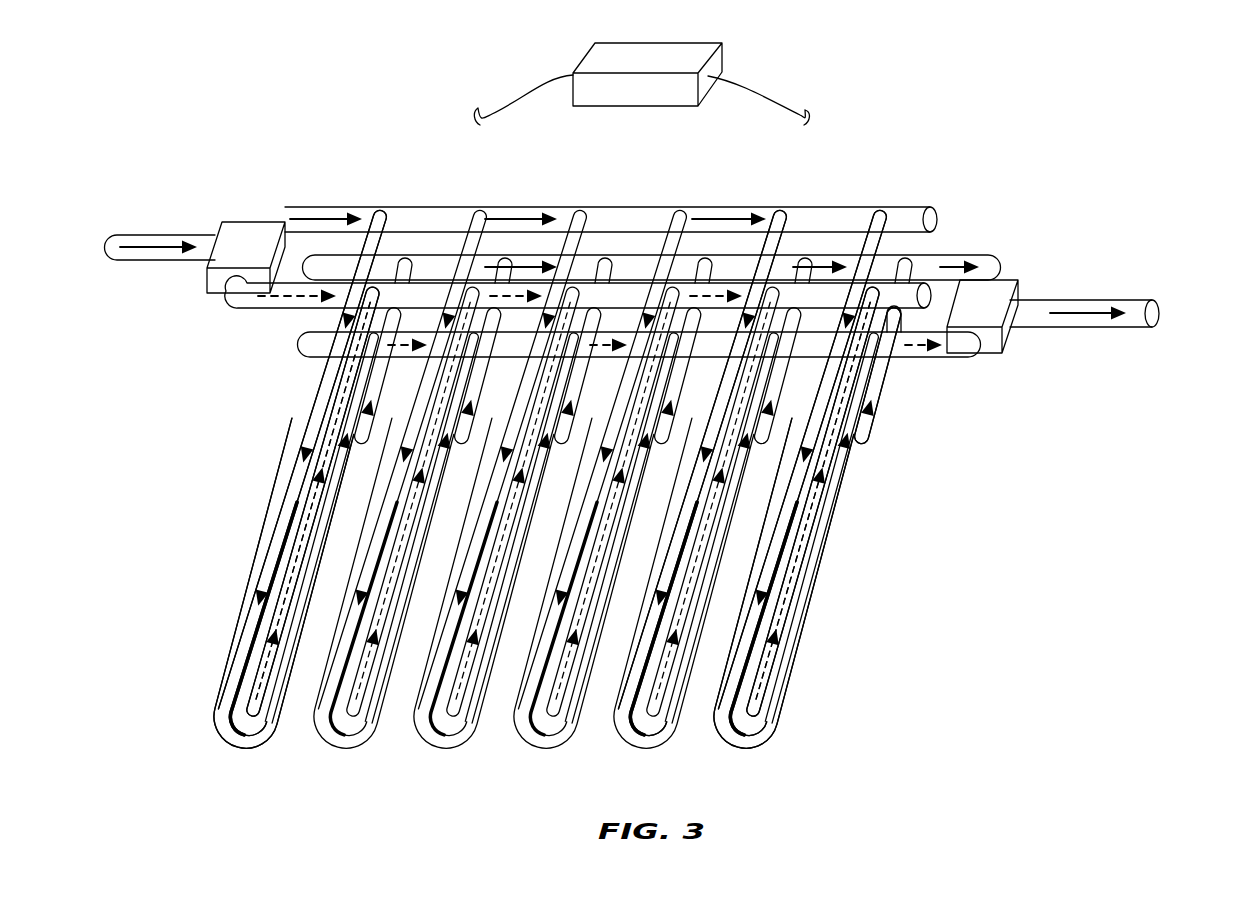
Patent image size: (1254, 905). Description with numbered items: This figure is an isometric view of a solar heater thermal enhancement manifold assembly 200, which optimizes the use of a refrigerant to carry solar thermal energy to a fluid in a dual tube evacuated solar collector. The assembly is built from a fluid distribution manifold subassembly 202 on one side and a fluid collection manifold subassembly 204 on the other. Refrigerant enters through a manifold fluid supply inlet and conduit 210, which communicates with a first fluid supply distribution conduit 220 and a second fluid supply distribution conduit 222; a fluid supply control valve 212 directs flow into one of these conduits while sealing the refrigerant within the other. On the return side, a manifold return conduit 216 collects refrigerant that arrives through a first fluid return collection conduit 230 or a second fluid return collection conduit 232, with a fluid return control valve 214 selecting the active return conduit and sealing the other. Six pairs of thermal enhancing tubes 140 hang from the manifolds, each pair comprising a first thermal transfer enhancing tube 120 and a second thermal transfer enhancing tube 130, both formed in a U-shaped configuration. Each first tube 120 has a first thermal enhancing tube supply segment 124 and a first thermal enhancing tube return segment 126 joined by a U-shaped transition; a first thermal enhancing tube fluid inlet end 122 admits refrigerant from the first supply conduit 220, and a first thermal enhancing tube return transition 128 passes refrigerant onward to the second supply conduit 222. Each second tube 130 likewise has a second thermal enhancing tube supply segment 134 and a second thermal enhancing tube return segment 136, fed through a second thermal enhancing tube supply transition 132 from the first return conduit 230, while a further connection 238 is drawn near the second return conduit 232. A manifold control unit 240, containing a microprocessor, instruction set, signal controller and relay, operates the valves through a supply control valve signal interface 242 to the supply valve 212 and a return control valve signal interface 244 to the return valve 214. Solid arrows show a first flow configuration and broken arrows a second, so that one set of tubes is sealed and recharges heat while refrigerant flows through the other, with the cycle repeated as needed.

The solar heater thermal enhancement manifold assembly 200 is at (184, 112).
The fluid distribution manifold subassembly 202 is at (194, 320).
The fluid collection manifold subassembly 204 is at (1046, 242).
The manifold fluid supply inlet and conduit 210 is at (194, 236).
The fluid supply control valve 212 is at (252, 242).
The fluid return control valve 214 is at (985, 302).
The manifold return conduit 216 is at (1085, 300).
The first fluid supply distribution conduit 220 is at (548, 205).
The second fluid supply distribution conduit 222 is at (262, 310).
The first fluid return collection conduit 230 is at (628, 252).
The second fluid return collection conduit 232 is at (897, 267).
The secondary tube connection 238 is at (890, 314).
The manifold control unit 240 is at (648, 60).
The supply control valve signal interface 242 is at (523, 97).
The return control valve signal interface 244 is at (772, 101).
The first thermal transfer enhancing tube 120 is at (256, 596).
The first thermal enhancing tube fluid inlet end 122 is at (390, 214).
The first thermal enhancing tube supply segment 124 is at (795, 505).
The first thermal enhancing tube return segment 126 is at (808, 573).
The first thermal enhancing tube return transition 128 is at (408, 262).
The second thermal transfer enhancing tube 130 is at (236, 686).
The second thermal enhancing tube supply transition 132 is at (792, 212).
The second thermal enhancing tube supply segment 134 is at (832, 408).
The second thermal enhancing tube return segment 136 is at (845, 470).
The pair of thermal enhancing tubes 140 is at (734, 762).